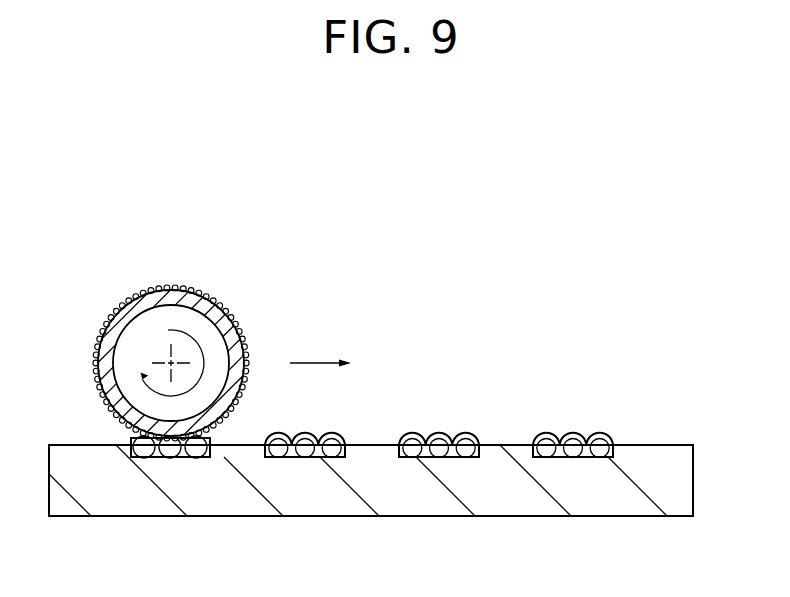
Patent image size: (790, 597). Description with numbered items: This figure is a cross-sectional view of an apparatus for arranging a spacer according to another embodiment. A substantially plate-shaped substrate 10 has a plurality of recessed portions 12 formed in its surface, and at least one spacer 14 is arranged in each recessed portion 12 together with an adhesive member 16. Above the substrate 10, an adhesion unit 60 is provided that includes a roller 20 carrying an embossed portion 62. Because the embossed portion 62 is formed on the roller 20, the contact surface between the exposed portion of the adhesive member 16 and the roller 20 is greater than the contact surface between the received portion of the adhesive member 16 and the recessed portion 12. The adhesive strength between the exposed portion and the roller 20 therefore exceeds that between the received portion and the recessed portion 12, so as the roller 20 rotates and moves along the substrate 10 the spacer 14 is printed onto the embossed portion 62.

The substrate 10 is at (662, 480).
The recessed portion 12 is at (590, 458).
The spacer 14 is at (598, 446).
The adhesive member 16 is at (561, 437).
The roller 20 is at (243, 341).
The adhesion unit 60 is at (201, 324).
The embossed portion 62 is at (227, 313).